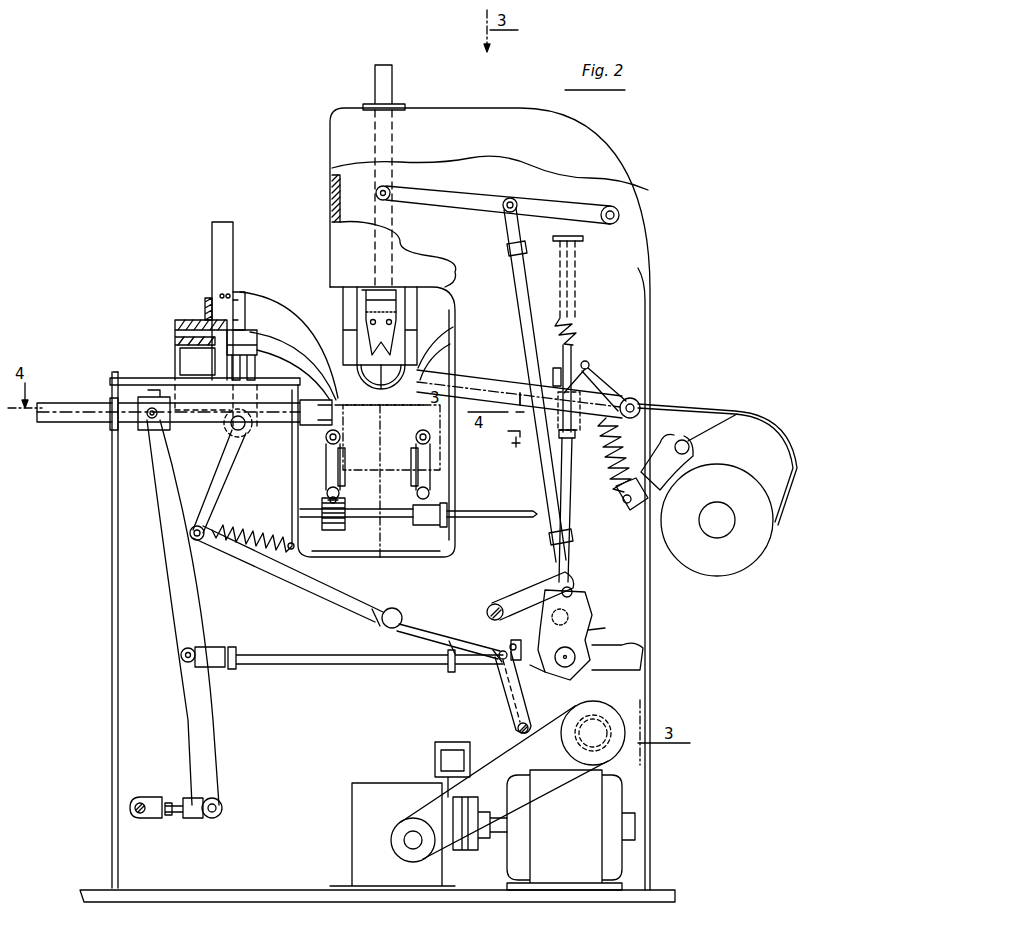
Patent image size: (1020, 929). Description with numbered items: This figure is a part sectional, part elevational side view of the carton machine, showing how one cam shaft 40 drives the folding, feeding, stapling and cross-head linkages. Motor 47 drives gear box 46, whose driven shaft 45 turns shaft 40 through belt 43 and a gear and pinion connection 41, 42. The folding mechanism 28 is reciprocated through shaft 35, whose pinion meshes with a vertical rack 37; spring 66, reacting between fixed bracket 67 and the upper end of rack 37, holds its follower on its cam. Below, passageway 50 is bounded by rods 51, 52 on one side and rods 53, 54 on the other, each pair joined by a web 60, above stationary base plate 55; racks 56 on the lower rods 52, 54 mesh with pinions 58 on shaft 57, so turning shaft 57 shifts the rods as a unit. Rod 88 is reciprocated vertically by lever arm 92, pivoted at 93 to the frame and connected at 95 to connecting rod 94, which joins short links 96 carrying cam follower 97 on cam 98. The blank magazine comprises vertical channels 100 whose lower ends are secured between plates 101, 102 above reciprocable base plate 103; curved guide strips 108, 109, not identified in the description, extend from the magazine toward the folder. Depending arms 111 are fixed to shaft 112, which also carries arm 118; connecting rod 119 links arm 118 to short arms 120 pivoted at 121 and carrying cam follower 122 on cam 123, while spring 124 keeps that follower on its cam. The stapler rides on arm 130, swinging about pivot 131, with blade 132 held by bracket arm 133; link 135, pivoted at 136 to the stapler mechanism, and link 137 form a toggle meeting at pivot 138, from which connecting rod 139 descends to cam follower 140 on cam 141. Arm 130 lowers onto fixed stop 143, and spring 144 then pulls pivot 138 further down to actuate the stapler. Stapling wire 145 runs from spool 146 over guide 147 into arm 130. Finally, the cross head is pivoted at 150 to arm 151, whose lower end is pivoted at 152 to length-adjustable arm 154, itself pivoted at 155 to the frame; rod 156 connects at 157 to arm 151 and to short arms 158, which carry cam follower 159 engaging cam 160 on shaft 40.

The folding mechanism 28 is at (339, 305).
The shaft 35 is at (516, 380).
The rack 37 is at (560, 340).
The shaft 40 is at (578, 654).
The gear 41 is at (645, 658).
The pinion 42 is at (610, 725).
The belt 43 is at (478, 782).
The driven shaft 45 is at (413, 862).
The gear box 46 is at (352, 815).
The motor 47 is at (584, 831).
The passageway 50 is at (391, 482).
The rod 51 is at (326, 440).
The rod 52 is at (327, 490).
The rod 53 is at (430, 432).
The rod 54 is at (430, 494).
The base plate 55 is at (372, 520).
The rack 56 is at (328, 500).
The shaft 57 is at (526, 508).
The pinion 58 is at (320, 530).
The web 60 is at (326, 462).
The spring 66 is at (576, 322).
The bracket 67 is at (585, 243).
The rod 88 is at (378, 186).
The lever arm 92 is at (476, 200).
The pivot 93 is at (615, 205).
The connecting rod 94 is at (527, 307).
The pivot 95 is at (513, 198).
The short links 96 is at (528, 580).
The cam follower 97 is at (574, 593).
The cam 98 is at (586, 604).
The vertical channels 100 is at (240, 236).
The plate 101 is at (205, 305).
The plate 102 is at (245, 294).
The base plate 103 is at (175, 328).
The hook 108 is at (292, 318).
The guide 109 is at (286, 350).
The depending arms 111 is at (258, 362).
The shaft 112 is at (246, 428).
The arm 118 is at (228, 440).
The connecting rod 119 is at (318, 600).
The short arms 120 is at (530, 700).
The pivot 121 is at (530, 722).
The cam follower 122 is at (522, 636).
The cam 123 is at (560, 678).
The spring 124 is at (255, 530).
The arm 130 is at (533, 411).
The pivot 131 is at (634, 398).
The blade 132 is at (447, 342).
The bracket arm 133 is at (447, 358).
The link 135 is at (556, 366).
The pivot 136 is at (566, 410).
The link 137 is at (612, 378).
The pivot 138 is at (589, 362).
The connecting rod 139 is at (580, 540).
The cam follower 140 is at (575, 622).
The cam 141 is at (611, 635).
The stop 143 is at (528, 443).
The spring 144 is at (623, 450).
The stapling wire 145 is at (722, 402).
The spool 146 is at (756, 575).
The guide 147 is at (728, 420).
The pivot 150 is at (148, 420).
The arm 151 is at (198, 612).
The pivot 152 is at (222, 800).
The arm 154 is at (190, 783).
The pivot 155 is at (140, 790).
The rod 156 is at (278, 672).
The pivot 157 is at (496, 662).
The short arms 158 is at (504, 696).
The cam follower 159 is at (496, 651).
The cam 160 is at (511, 644).